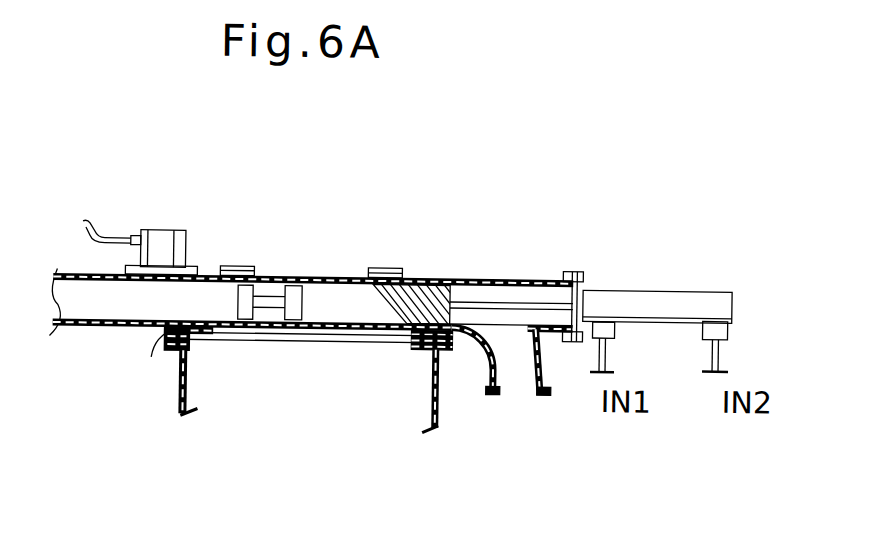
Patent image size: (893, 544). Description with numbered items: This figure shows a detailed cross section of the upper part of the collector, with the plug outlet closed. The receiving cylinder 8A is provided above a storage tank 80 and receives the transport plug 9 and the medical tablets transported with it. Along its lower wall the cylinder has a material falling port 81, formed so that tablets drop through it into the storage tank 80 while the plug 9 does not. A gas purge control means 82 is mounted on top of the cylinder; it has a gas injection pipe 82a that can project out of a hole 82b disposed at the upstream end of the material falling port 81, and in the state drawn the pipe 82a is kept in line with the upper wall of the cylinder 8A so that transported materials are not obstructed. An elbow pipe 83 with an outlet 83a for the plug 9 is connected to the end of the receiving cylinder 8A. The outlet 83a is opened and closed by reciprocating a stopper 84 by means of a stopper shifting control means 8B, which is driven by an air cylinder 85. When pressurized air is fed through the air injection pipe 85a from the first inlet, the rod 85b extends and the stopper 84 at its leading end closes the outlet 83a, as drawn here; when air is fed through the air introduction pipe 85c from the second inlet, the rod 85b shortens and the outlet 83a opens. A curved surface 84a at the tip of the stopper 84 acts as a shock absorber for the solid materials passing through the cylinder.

The receiving cylinder 8A is at (315, 280).
The stopper shifting control means 8B is at (603, 301).
The transport plug 9 is at (270, 304).
The storage tank 80 is at (441, 393).
The material falling port 81 is at (345, 324).
The gas purge control means 82 is at (158, 242).
The gas injection pipe 82a is at (160, 285).
The hole 82b is at (225, 234).
The elbow pipe 83 is at (548, 362).
The outlet 83a is at (520, 387).
The stopper 84 is at (438, 284).
The curved surface 84a is at (388, 313).
The air cylinder 85 is at (672, 302).
The air injection pipe 85a is at (608, 356).
The rod 85b is at (512, 300).
The air introduction pipe 85c is at (721, 354).